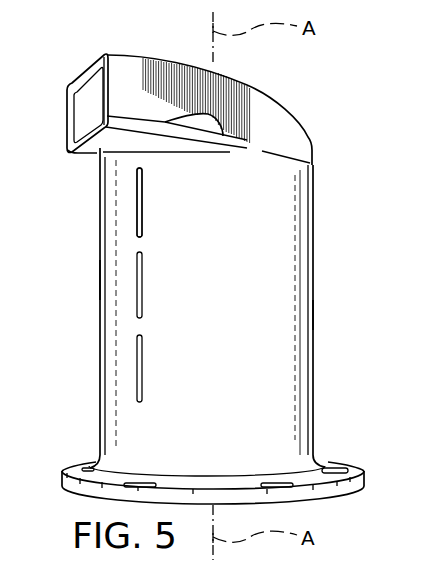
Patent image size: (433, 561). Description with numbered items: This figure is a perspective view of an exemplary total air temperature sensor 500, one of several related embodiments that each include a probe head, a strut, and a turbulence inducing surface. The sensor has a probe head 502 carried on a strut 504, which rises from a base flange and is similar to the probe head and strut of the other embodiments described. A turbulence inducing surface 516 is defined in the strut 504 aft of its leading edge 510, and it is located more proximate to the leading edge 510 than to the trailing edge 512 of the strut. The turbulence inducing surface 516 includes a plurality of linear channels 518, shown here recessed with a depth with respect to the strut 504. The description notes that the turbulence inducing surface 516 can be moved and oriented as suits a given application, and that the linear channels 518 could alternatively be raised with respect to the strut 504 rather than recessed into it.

The total air temperature sensor 500 is at (334, 116).
The probe head 502 is at (179, 78).
The strut 504 is at (263, 360).
The leading edge 510 is at (100, 285).
The trailing edge 512 is at (313, 317).
The turbulence inducing surface 516 is at (160, 284).
The linear channels 518 is at (142, 202).